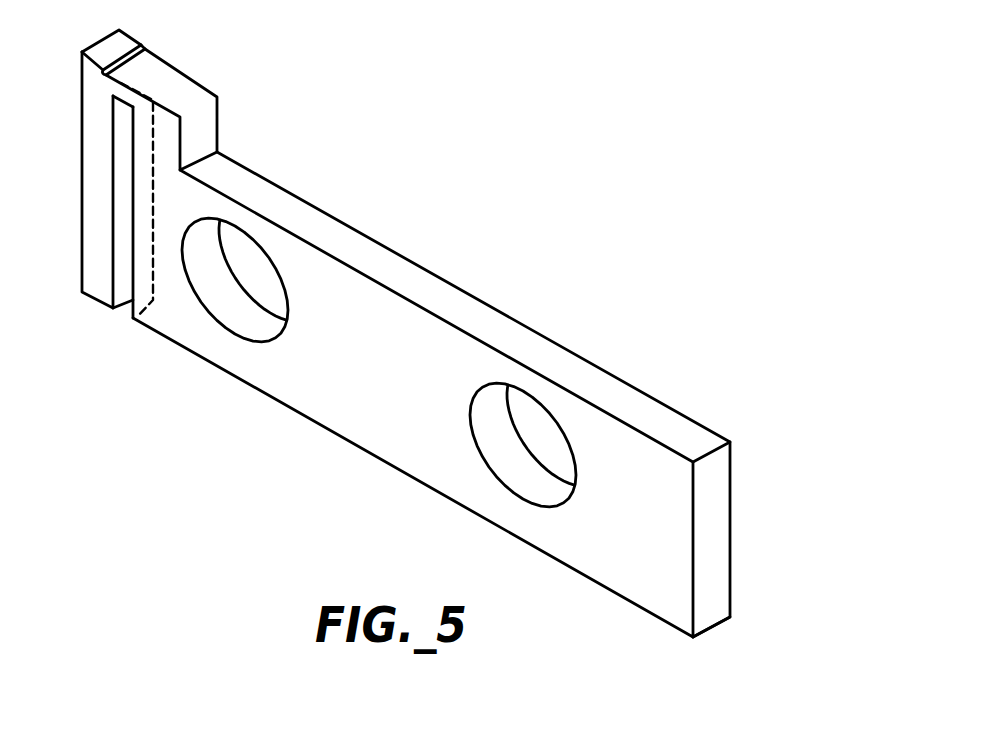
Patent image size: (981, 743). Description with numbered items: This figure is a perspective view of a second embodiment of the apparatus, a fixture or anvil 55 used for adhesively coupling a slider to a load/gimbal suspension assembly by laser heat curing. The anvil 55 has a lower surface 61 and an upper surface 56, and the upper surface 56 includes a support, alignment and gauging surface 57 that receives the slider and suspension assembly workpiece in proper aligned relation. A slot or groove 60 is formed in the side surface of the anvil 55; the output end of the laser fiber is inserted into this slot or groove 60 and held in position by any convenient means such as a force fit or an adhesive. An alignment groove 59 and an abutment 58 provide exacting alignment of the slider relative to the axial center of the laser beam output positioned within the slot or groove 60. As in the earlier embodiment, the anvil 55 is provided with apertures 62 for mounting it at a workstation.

The fixture or anvil 55 is at (517, 258).
The upper surface 56 is at (375, 258).
The support, alignment and gauging surface 57 is at (188, 88).
The abutment 58 is at (108, 48).
The alignment groove 59 is at (135, 58).
The slot or groove 60 is at (122, 230).
The lower surface 61 is at (712, 625).
The apertures 62 is at (233, 315).